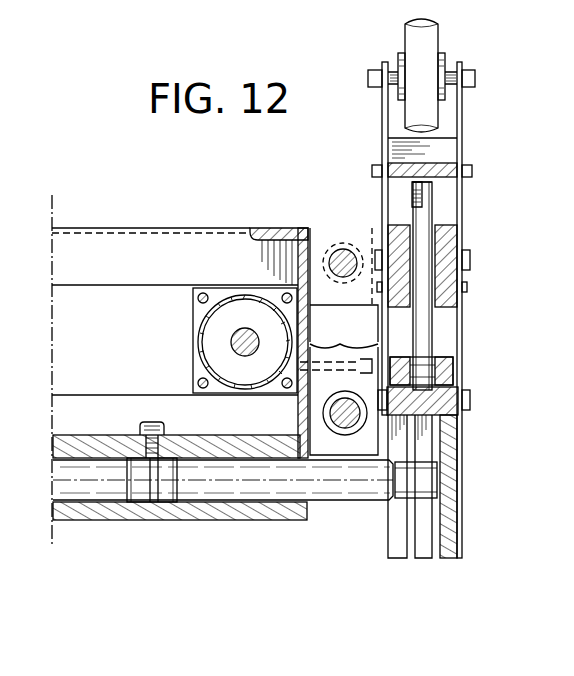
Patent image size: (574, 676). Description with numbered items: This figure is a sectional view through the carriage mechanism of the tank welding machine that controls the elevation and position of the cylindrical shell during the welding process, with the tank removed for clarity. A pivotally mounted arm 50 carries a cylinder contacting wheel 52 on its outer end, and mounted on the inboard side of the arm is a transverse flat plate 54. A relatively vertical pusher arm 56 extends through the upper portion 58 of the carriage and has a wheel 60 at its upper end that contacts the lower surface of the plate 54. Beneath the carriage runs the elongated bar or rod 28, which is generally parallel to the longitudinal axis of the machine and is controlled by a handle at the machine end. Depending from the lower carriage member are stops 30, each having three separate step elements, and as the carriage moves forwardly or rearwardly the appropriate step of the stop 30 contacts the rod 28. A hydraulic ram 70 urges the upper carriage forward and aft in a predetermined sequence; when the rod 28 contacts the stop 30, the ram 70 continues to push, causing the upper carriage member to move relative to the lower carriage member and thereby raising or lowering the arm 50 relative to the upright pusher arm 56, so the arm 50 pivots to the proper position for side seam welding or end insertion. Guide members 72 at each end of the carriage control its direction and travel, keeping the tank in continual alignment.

The rod 28 is at (223, 480).
The stop 30 is at (397, 558).
The pivotally mounted arm 50 is at (460, 155).
The cylinder contacting wheel 52 is at (428, 40).
The transverse flat plate 54 is at (428, 166).
The pusher arm 56 is at (435, 215).
The upper portion of the carriage 58 is at (450, 240).
The wheel 60 is at (420, 193).
The hydraulic ram 70 is at (256, 323).
The guide member 72 is at (344, 278).